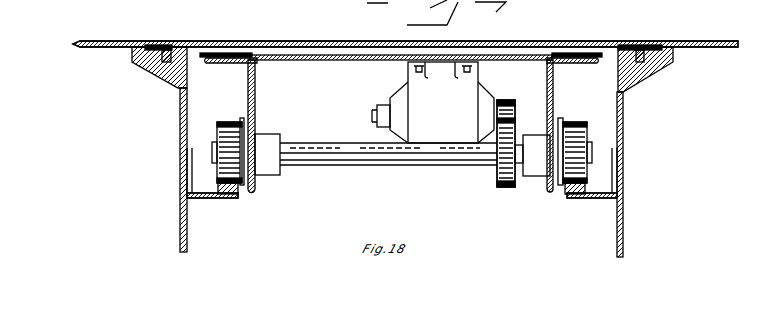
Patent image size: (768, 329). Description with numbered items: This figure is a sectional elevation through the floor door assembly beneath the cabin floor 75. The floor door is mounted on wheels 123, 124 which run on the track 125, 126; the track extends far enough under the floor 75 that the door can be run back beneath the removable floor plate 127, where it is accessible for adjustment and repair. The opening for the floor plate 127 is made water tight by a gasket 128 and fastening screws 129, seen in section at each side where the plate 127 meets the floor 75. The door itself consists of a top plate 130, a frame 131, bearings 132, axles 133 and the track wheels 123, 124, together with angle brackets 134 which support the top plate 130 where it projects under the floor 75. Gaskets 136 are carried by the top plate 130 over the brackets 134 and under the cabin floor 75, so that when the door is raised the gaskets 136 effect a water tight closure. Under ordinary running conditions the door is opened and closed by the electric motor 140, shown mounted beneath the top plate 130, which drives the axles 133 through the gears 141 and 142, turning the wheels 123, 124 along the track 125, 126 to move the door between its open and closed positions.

The floor 75 is at (110, 42).
The removable floor plate 127 is at (278, 42).
The gasket 128 is at (145, 62).
The fastening screws 129 is at (167, 43).
The top plate 130 is at (327, 60).
The frame 131 is at (255, 118).
The bearings 132 is at (280, 175).
The axles 133 is at (348, 157).
The angle brackets 134 is at (247, 88).
The gaskets 136 is at (223, 55).
The electric motor 140 is at (378, 107).
The gear 141 is at (507, 100).
The gear 142 is at (497, 177).
The wheel 123 is at (220, 135).
The wheel 124 is at (582, 133).
The track 125 is at (238, 193).
The track 126 is at (565, 192).